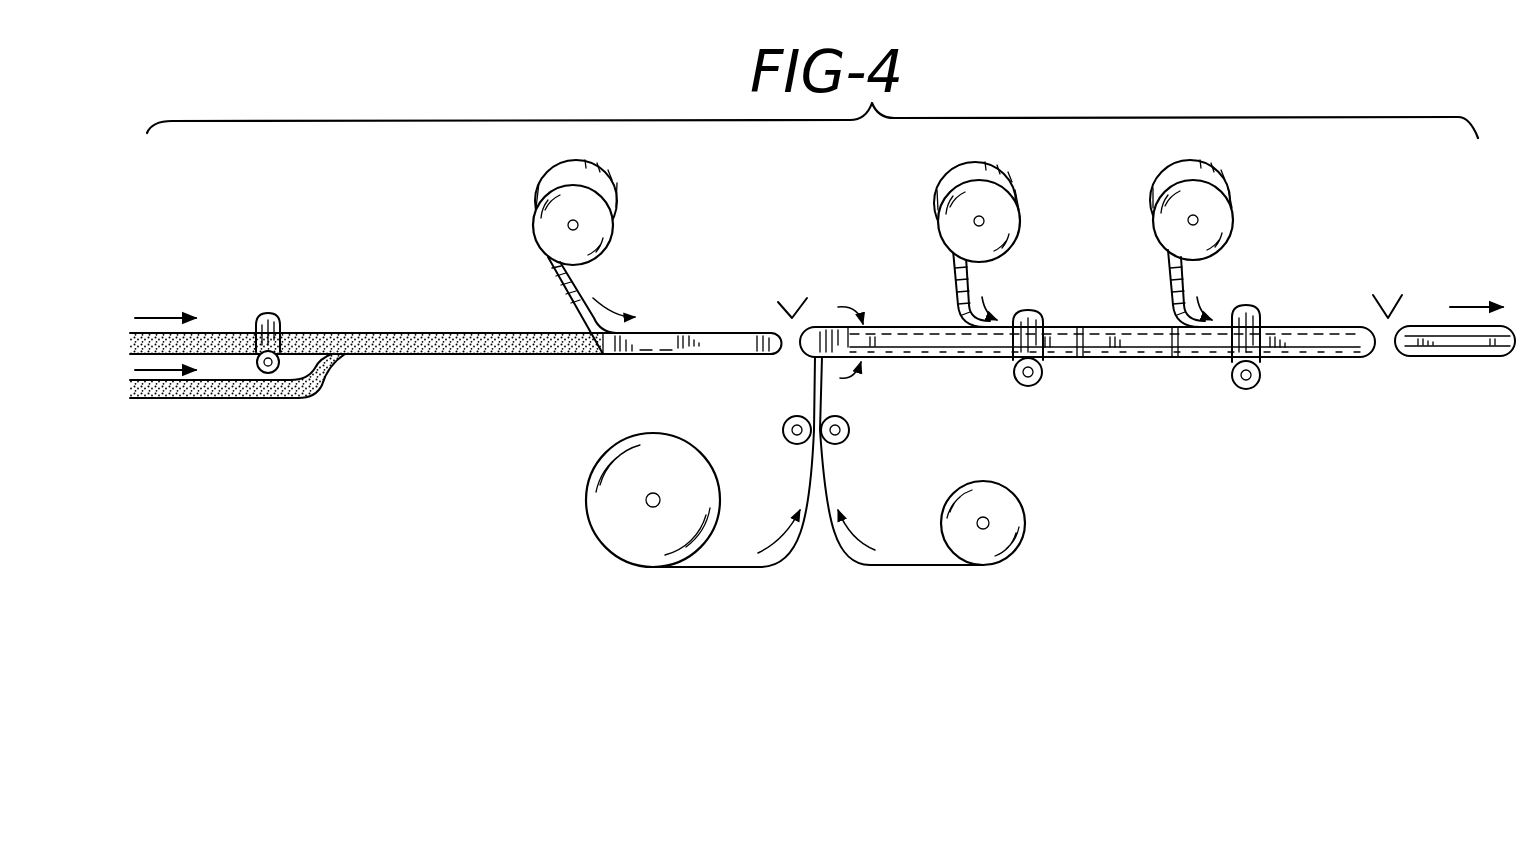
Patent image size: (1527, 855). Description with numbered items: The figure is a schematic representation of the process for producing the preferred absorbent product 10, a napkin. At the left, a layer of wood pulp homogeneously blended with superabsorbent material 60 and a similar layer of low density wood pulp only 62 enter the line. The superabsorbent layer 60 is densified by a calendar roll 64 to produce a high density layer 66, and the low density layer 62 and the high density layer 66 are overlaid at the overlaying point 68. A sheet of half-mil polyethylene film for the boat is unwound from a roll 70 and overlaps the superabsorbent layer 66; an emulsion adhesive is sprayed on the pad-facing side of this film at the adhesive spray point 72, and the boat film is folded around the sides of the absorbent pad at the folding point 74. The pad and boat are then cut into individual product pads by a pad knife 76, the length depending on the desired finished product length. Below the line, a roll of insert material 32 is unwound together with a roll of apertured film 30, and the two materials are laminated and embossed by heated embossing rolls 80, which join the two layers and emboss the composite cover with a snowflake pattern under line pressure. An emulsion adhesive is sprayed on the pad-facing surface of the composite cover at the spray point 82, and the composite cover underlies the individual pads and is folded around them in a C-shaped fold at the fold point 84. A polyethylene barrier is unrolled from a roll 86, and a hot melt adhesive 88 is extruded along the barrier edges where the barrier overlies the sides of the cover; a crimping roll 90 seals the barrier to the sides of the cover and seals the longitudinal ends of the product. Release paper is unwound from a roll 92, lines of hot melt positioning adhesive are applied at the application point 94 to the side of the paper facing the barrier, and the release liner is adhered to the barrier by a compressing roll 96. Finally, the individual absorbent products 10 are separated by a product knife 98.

The absorbent product 10 is at (1455, 360).
The roll of apertured film 30 is at (1025, 515).
The roll of insert material 32 is at (610, 517).
The layer of wood pulp blended with superabsorbent material 60 is at (235, 343).
The layer of low density wood pulp 62 is at (230, 392).
The calendar roll 64 is at (267, 313).
The high density layer 66 is at (330, 329).
The overlaying point 68 is at (347, 368).
The roll of polyethylene film 70 is at (601, 186).
The emulsion adhesive spray point 72 is at (558, 322).
The boat film folding point 74 is at (600, 368).
The pad knife 76 is at (777, 300).
The embossing rolls 80 is at (850, 431).
The emulsion adhesive spray point 82 is at (804, 364).
The C-shaped fold point 84 is at (831, 379).
The roll of polyethylene barrier 86 is at (1012, 183).
The hot melt adhesive 88 is at (954, 319).
The crimping roll 90 is at (1030, 310).
The roll of release paper 92 is at (1232, 185).
The positioning adhesive application point 94 is at (1171, 319).
The compressing roll 96 is at (1246, 305).
The product knife 98 is at (1400, 305).